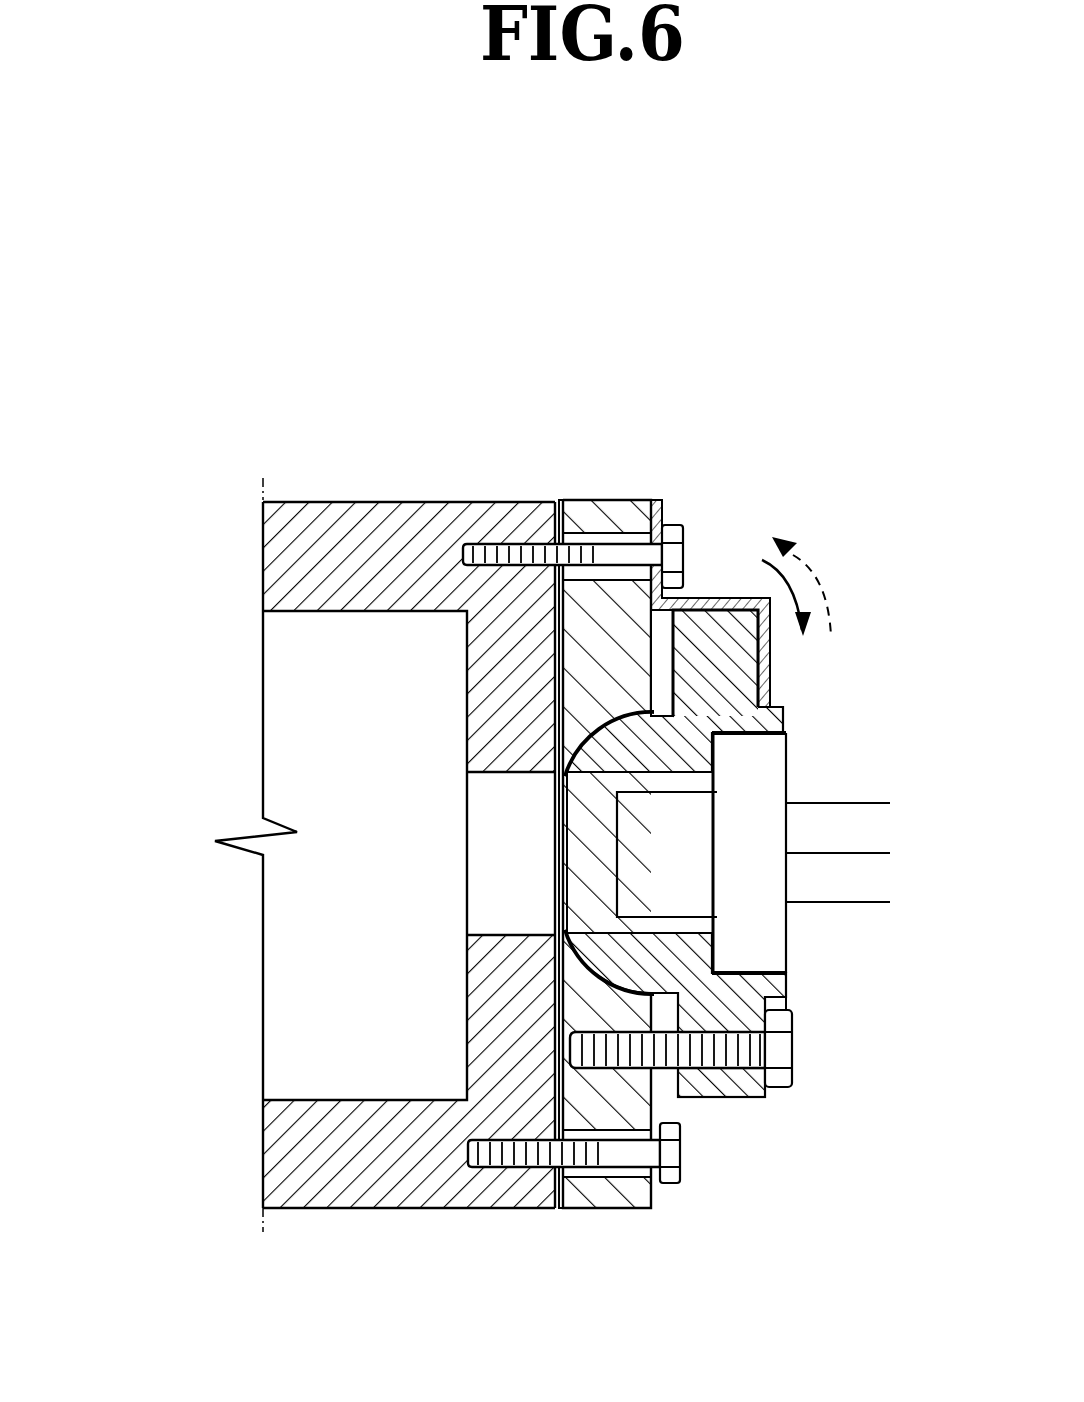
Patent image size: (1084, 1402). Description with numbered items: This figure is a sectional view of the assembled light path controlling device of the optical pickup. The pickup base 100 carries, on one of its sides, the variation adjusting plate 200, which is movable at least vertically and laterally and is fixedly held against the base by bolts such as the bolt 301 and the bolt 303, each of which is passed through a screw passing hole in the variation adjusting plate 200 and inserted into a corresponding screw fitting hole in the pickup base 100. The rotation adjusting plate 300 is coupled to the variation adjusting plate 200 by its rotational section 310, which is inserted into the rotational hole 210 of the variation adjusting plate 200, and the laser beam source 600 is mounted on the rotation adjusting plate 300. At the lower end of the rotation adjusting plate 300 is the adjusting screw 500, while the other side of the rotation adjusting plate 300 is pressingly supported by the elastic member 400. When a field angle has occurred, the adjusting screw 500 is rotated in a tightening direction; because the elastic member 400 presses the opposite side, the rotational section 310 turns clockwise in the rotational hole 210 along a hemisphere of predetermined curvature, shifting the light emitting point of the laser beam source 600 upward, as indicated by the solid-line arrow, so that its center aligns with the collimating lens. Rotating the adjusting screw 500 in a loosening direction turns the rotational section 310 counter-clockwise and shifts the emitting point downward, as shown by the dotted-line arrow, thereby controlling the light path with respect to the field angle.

The pickup base 100 is at (488, 1083).
The variation adjusting plate 200 is at (612, 1197).
The rotational hole 210 is at (570, 950).
The rotation adjusting plate 300 is at (535, 756).
The bolt 301 is at (683, 540).
The bolt 303 is at (668, 1153).
The rotational section 310 is at (630, 752).
The elastic member 400 is at (722, 598).
The adjusting screw 500 is at (783, 1048).
The laser beam source 600 is at (790, 783).